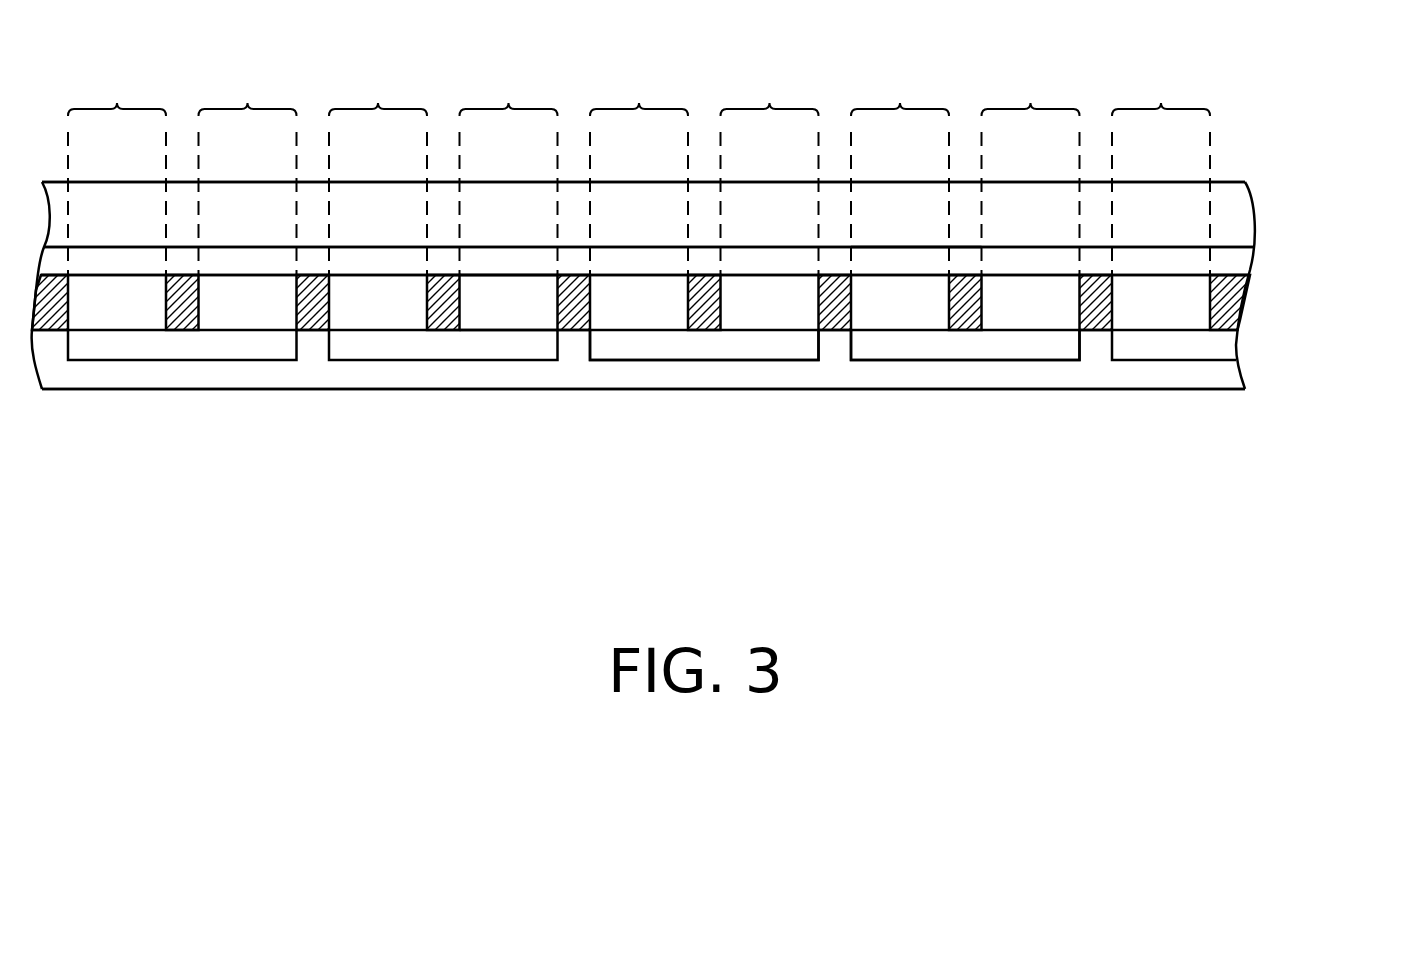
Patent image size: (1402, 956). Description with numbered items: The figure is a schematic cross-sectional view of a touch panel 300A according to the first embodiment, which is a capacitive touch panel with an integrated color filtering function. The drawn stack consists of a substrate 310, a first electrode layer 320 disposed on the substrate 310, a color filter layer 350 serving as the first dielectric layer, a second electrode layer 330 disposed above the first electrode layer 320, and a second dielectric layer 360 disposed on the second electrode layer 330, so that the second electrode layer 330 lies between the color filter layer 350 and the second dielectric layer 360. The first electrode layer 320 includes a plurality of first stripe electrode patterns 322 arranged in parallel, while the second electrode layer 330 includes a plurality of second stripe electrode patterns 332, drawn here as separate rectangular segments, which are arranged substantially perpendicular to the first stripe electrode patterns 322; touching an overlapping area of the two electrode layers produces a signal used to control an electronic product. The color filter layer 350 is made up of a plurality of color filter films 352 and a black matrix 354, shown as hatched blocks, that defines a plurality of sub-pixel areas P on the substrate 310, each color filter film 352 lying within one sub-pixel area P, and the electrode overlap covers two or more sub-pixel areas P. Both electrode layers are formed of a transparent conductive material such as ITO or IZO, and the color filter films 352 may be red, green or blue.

The touch panel 300A is at (1232, 543).
The substrate 310 is at (1240, 217).
The first electrode layer 320 is at (1250, 266).
The first stripe electrode patterns 322 is at (907, 262).
The second electrode layer 330 is at (1237, 352).
The second stripe electrode patterns 332 is at (733, 350).
The color filter layer 350 is at (1243, 306).
The color filter films 352 is at (507, 323).
The black matrix 354 is at (572, 332).
The second dielectric layer 360 is at (1233, 375).
The sub-pixel areas P is at (639, 167).